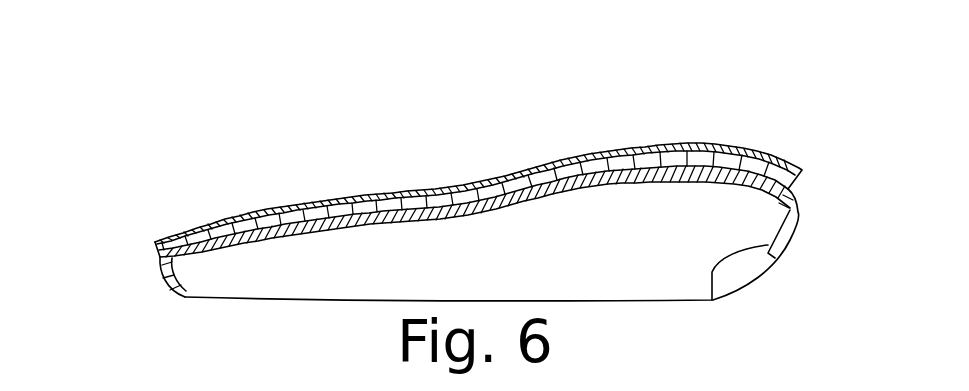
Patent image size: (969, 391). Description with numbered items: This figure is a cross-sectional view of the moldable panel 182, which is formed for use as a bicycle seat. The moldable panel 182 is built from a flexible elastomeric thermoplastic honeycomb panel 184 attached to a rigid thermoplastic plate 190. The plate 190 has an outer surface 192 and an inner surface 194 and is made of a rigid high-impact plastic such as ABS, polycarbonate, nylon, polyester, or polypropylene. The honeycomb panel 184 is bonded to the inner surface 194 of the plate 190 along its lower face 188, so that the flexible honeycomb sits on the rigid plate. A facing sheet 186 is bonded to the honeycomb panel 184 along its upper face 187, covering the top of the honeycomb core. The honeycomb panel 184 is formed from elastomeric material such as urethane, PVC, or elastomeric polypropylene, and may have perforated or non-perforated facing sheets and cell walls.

The moldable panel 182 is at (569, 98).
The flexible elastomeric thermoplastic honeycomb panel 184 is at (469, 203).
The facing sheet 186 is at (647, 147).
The upper face 187 is at (155, 249).
The lower face 188 is at (158, 265).
The rigid thermoplastic plate 190 is at (157, 282).
The outer surface 192 is at (712, 300).
The inner surface 194 is at (799, 211).